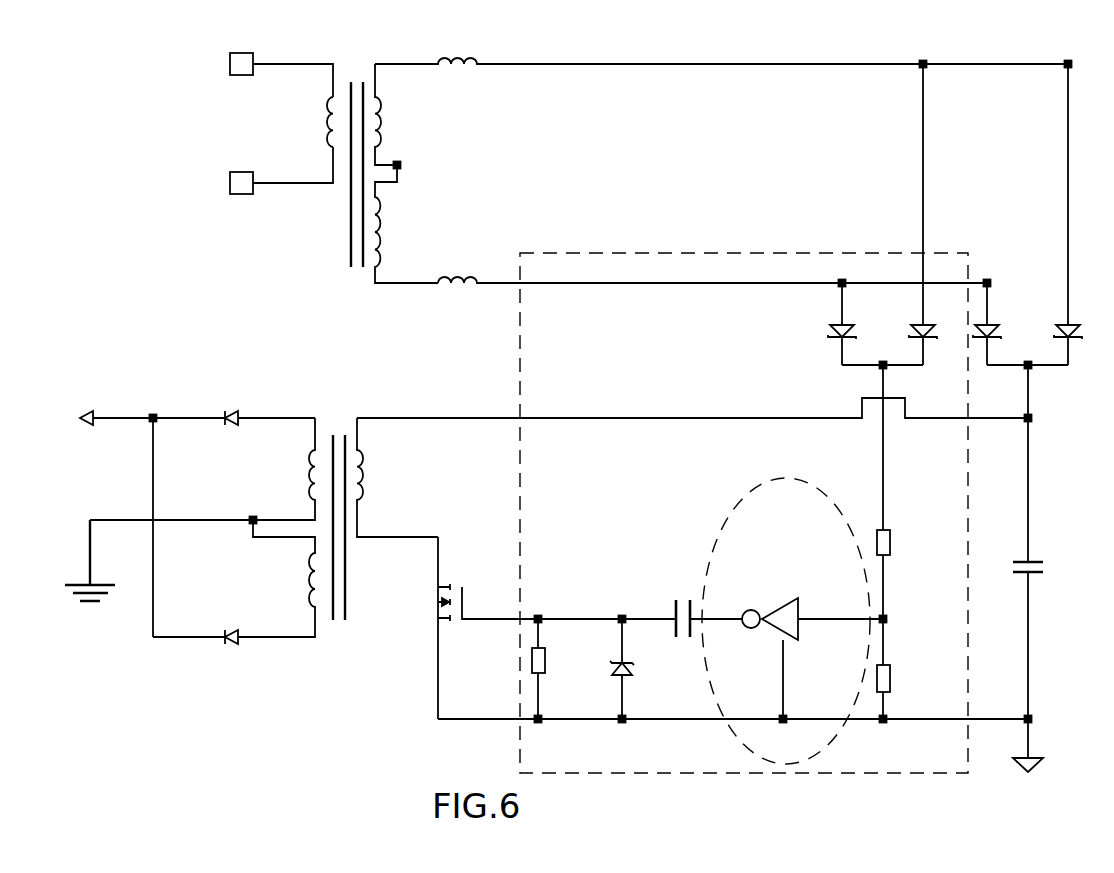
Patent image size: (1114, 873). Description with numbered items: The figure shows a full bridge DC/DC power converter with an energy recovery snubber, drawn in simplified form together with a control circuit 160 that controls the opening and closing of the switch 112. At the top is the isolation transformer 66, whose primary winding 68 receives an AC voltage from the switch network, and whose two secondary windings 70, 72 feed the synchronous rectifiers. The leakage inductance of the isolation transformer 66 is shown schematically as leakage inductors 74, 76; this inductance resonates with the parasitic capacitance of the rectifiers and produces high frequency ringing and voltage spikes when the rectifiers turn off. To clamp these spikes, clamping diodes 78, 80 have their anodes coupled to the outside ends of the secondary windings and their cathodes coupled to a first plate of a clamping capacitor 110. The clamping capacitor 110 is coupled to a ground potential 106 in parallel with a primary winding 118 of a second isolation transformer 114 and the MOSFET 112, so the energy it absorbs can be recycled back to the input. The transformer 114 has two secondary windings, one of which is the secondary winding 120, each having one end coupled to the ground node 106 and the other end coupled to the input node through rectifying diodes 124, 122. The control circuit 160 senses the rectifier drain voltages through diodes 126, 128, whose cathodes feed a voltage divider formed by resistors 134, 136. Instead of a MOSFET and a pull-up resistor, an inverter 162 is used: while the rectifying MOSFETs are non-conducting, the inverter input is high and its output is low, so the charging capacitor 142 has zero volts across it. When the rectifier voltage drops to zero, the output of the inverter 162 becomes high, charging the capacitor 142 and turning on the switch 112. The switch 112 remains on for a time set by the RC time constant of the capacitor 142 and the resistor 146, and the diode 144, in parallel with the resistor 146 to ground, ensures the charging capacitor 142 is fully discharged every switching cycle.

The isolation transformer 66 is at (378, 48).
The primary winding 68 is at (333, 97).
The secondary winding 70 is at (377, 118).
The secondary winding 72 is at (375, 270).
The leakage inductor 74 is at (477, 62).
The leakage inductor 76 is at (474, 282).
The clamping diode 78 is at (1000, 332).
The clamping diode 80 is at (1076, 338).
The ground potential 106 is at (1030, 740).
The clamping capacitor 110 is at (1024, 556).
The MOSFET 112 is at (424, 612).
The isolation transformer 114 is at (326, 390).
The primary winding 118 is at (360, 452).
The secondary winding 120 is at (318, 608).
The rectifying diode 122 is at (240, 640).
The rectifying diode 124 is at (236, 416).
The diode 126 is at (840, 330).
The diode 128 is at (910, 334).
The resistor 134 is at (888, 536).
The resistor 136 is at (888, 666).
The charging capacitor 142 is at (672, 614).
The diode 144 is at (616, 670).
The resistor 146 is at (532, 660).
The control circuit 160 is at (688, 774).
The inverter 162 is at (776, 612).